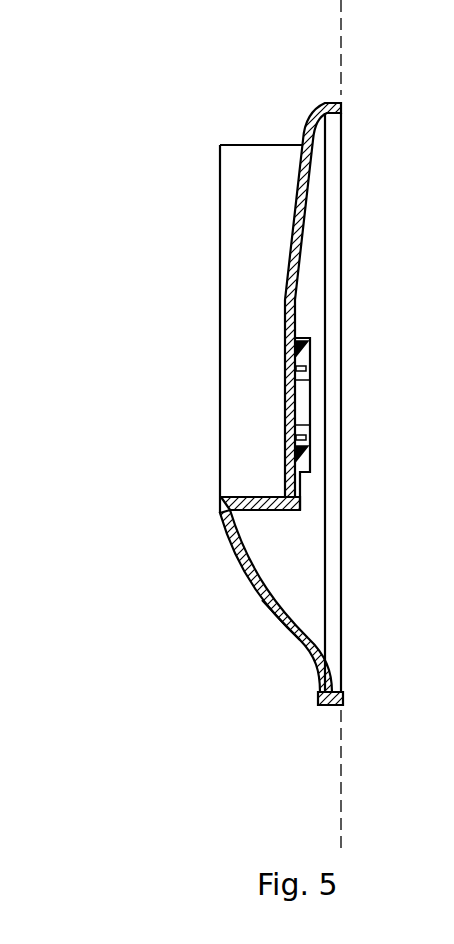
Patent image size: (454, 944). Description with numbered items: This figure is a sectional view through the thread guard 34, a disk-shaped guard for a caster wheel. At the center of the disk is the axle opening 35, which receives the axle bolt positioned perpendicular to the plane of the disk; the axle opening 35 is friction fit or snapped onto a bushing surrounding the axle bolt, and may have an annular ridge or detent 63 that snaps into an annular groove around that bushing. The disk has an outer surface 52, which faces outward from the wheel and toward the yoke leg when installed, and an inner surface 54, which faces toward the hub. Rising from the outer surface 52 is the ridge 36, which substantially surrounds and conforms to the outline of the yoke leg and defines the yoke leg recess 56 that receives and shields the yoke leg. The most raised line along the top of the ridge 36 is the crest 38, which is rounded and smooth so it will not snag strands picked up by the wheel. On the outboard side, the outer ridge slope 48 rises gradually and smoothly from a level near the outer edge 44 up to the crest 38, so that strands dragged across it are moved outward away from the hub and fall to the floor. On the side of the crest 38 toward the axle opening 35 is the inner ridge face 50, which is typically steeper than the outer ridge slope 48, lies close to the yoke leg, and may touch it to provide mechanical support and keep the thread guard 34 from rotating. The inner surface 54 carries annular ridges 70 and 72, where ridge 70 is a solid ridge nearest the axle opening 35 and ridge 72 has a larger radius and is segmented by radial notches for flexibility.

The thread guard 34 is at (364, 143).
The axle opening 35 is at (307, 407).
The ridge 36 is at (232, 545).
The crest 38 is at (220, 213).
The outer edge 44 is at (330, 706).
The outer ridge slope 48 is at (268, 603).
The inner ridge face 50 is at (255, 500).
The outer surface 52 is at (303, 125).
The inner surface 54 is at (306, 244).
The yoke leg recess 56 is at (252, 353).
The annular ridge or detent 63 is at (300, 386).
The annular ridge 70 is at (300, 365).
The annular ridge 72 is at (300, 337).